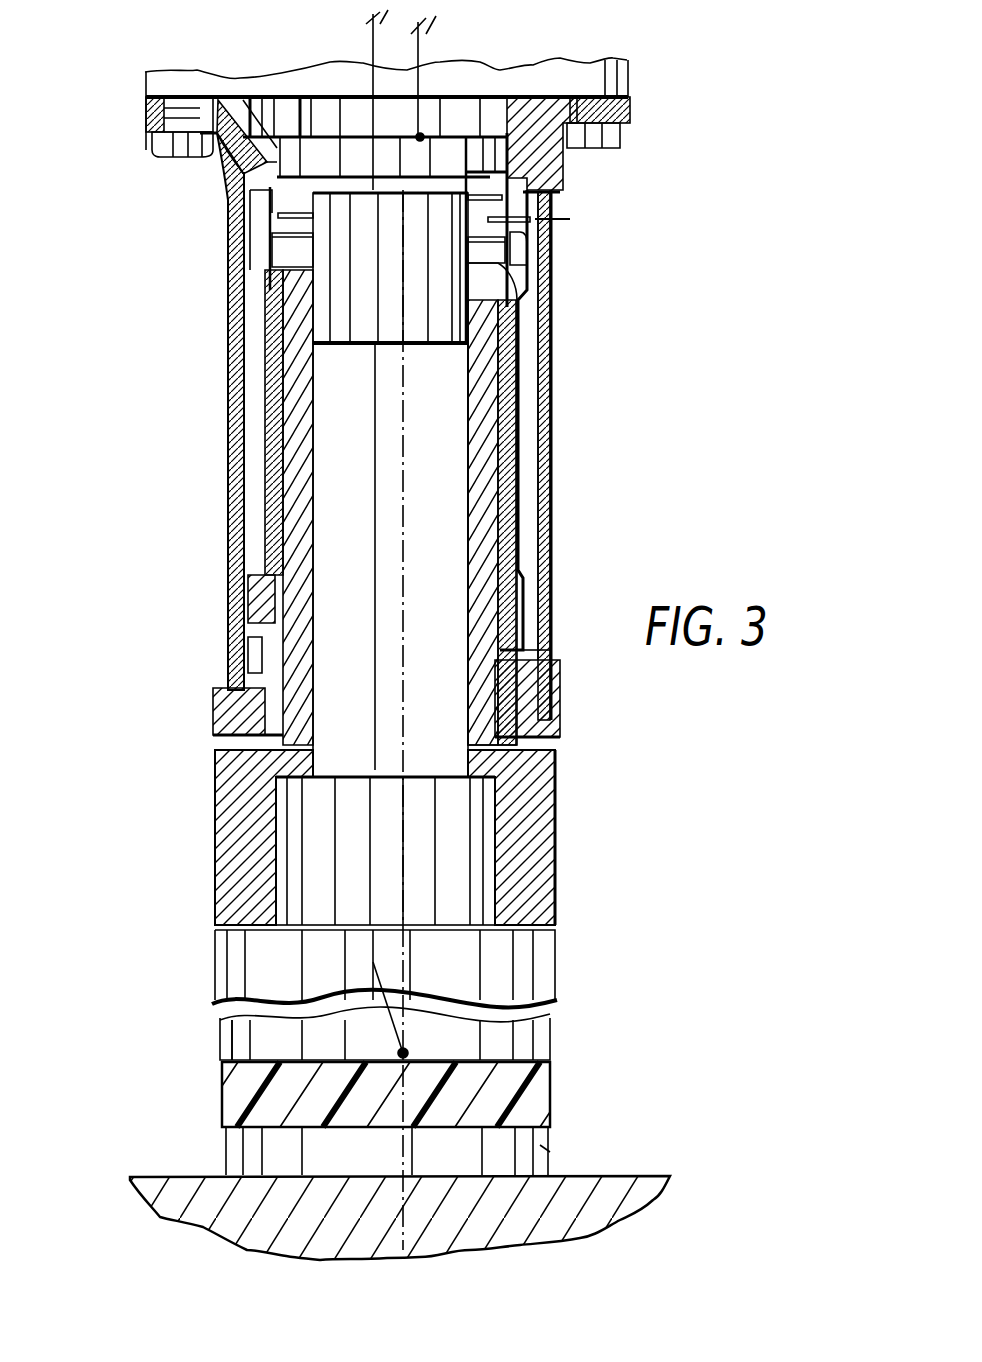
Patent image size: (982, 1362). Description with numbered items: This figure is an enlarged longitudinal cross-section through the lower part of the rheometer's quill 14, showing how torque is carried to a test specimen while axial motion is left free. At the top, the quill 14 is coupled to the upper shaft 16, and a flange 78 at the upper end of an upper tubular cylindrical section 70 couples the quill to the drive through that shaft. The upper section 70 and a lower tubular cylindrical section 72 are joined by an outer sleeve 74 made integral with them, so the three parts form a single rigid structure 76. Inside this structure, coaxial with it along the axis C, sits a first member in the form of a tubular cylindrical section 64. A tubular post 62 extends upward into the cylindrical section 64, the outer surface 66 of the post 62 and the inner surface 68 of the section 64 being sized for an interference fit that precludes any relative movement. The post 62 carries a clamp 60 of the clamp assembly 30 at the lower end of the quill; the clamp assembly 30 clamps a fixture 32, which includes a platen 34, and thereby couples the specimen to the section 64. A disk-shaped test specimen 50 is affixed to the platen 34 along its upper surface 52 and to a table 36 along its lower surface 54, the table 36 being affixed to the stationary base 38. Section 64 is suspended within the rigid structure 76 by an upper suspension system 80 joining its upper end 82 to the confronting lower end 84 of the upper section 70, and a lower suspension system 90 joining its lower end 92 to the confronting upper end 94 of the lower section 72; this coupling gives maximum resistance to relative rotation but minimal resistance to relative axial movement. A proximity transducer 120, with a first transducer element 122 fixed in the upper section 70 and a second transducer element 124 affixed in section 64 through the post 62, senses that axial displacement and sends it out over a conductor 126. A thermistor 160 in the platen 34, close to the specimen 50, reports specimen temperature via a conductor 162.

The quill 14 is at (226, 446).
The upper shaft 16 is at (148, 97).
The clamp assembly 30 is at (560, 880).
The fixture 32 is at (545, 968).
The platen 34 is at (540, 1040).
The table 36 is at (547, 1156).
The stationary base 38 is at (622, 1178).
The test specimen 50 is at (228, 1096).
The upper surface 52 is at (266, 1062).
The lower surface 54 is at (255, 1139).
The clamp 60 is at (555, 815).
The tubular post 62 is at (470, 400).
The tubular cylindrical section 64 is at (520, 404).
The outer surface 66 is at (520, 441).
The inner surface 68 is at (470, 496).
The upper tubular cylindrical section 70 is at (575, 150).
The lower tubular cylindrical section 72 is at (560, 717).
The outer sleeve 74 is at (552, 504).
The rigid structure 76 is at (553, 572).
The flange 78 is at (632, 110).
The upper suspension system 80 is at (553, 220).
The upper end 82 is at (537, 248).
The lower end 84 is at (545, 186).
The lower suspension system 90 is at (240, 643).
The lower end 92 is at (260, 596).
The upper end 94 is at (235, 672).
The proximity transducer 120 is at (337, 183).
The first transducer element 122 is at (312, 146).
The second transducer element 124 is at (333, 307).
The conductor 126 is at (420, 48).
The thermistor 160 is at (397, 1062).
The conductor 162 is at (365, 46).
The axis C is at (403, 1238).